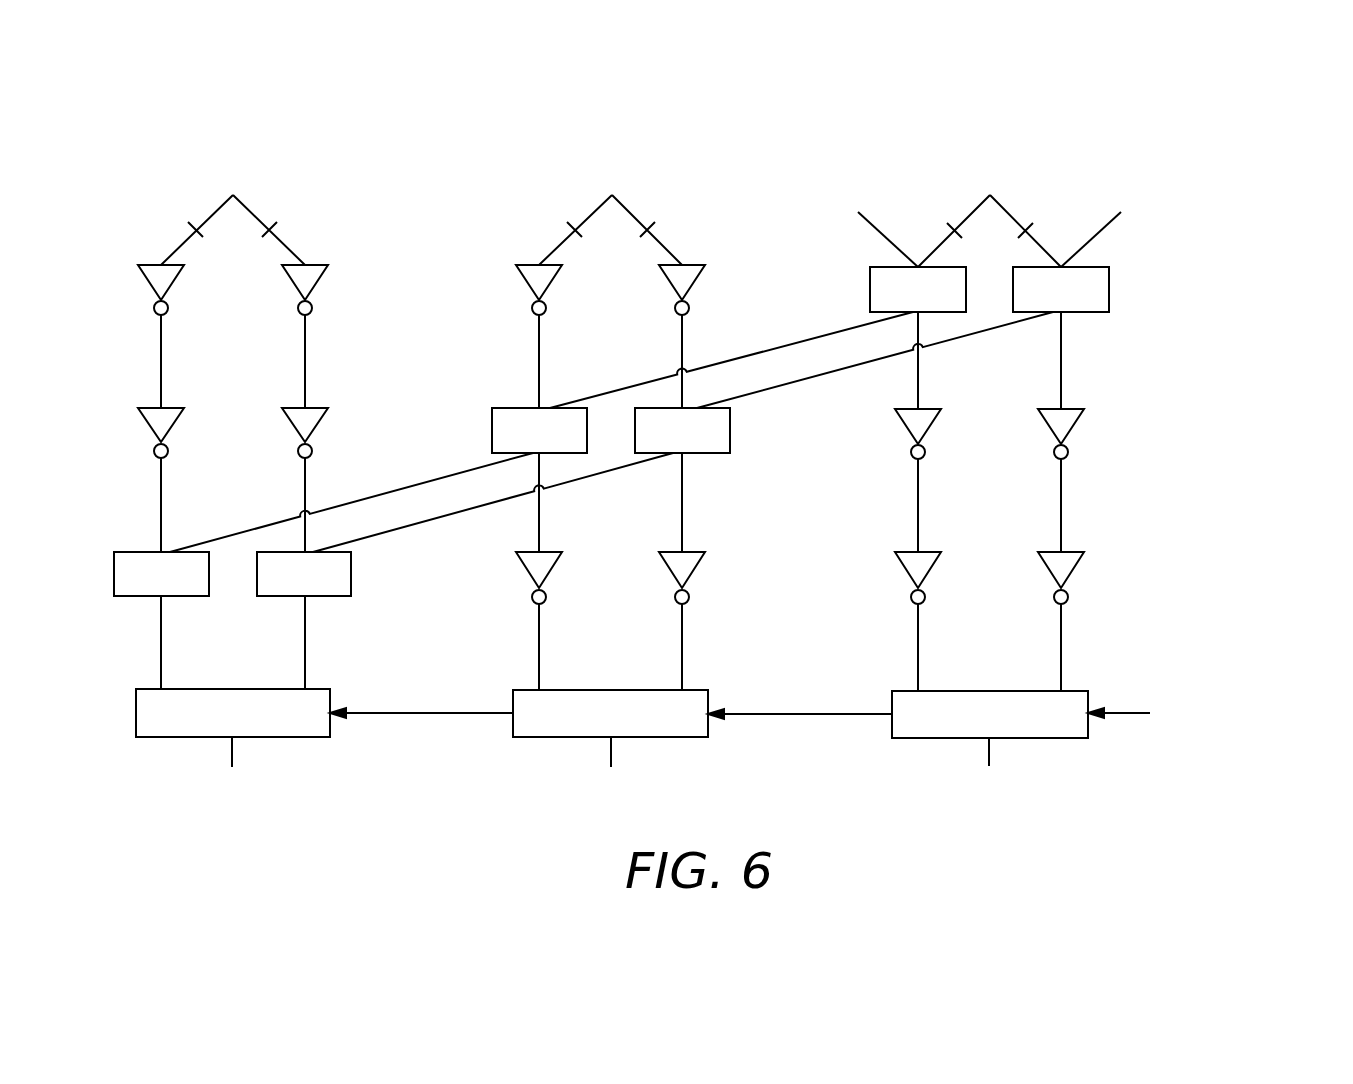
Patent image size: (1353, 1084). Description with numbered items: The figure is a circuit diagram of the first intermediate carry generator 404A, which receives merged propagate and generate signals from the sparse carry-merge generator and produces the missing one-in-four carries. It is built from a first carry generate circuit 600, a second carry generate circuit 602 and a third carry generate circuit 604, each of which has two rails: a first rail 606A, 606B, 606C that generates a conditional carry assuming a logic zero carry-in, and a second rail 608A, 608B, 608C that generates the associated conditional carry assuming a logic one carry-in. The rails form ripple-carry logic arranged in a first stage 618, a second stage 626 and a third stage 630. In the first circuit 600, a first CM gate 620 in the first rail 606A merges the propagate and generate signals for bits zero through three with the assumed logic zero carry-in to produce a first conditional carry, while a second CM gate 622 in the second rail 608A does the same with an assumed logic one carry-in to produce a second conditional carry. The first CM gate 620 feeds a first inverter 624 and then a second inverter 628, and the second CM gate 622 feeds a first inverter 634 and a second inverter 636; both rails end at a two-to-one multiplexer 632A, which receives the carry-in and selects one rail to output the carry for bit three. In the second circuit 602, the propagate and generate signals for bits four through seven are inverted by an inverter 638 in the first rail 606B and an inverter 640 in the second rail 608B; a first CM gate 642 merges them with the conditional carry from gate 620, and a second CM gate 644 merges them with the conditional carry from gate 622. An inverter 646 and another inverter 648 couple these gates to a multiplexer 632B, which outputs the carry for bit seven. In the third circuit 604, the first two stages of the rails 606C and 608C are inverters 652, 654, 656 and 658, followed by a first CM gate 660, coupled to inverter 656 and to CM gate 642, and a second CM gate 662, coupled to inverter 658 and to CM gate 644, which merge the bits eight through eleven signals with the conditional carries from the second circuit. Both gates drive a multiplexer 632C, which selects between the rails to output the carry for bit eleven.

The intermediate carry generator 404A is at (1211, 130).
The first carry generate circuit 600 is at (1037, 201).
The second carry generate circuit 602 is at (658, 201).
The third carry generate circuit 604 is at (280, 201).
The first rail 606A is at (1063, 490).
The first rail 606B is at (684, 343).
The first rail 606C is at (307, 343).
The second rail 608A is at (920, 490).
The second rail 608B is at (541, 343).
The second rail 608C is at (163, 343).
The first stage 618 is at (1137, 285).
The first CM gate 620 is at (1097, 265).
The second CM gate 622 is at (881, 265).
The first inverter 624 is at (1072, 407).
The second stage 626 is at (1107, 427).
The second inverter 628 is at (1073, 550).
The third stage 630 is at (1105, 572).
The 2:1 multiplexer 632A is at (902, 689).
The 2:1 multiplexer 632B is at (523, 688).
The 2:1 multiplexer 632C is at (147, 687).
The first inverter 634 is at (907, 407).
The second inverter 636 is at (907, 550).
The inverter 638 is at (692, 263).
The inverter 640 is at (530, 263).
The first CM gate 642 is at (731, 432).
The second CM gate 644 is at (502, 406).
The inverter 646 is at (694, 550).
The inverter 648 is at (528, 550).
The inverter 652 is at (312, 263).
The inverter 654 is at (150, 263).
The inverter 656 is at (312, 406).
The inverter 658 is at (150, 406).
The first CM gate 660 is at (352, 573).
The second CM gate 662 is at (125, 550).